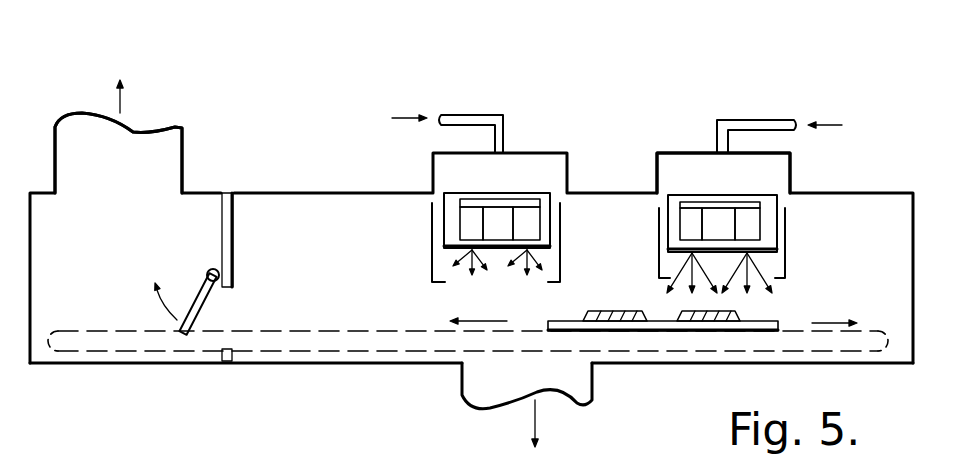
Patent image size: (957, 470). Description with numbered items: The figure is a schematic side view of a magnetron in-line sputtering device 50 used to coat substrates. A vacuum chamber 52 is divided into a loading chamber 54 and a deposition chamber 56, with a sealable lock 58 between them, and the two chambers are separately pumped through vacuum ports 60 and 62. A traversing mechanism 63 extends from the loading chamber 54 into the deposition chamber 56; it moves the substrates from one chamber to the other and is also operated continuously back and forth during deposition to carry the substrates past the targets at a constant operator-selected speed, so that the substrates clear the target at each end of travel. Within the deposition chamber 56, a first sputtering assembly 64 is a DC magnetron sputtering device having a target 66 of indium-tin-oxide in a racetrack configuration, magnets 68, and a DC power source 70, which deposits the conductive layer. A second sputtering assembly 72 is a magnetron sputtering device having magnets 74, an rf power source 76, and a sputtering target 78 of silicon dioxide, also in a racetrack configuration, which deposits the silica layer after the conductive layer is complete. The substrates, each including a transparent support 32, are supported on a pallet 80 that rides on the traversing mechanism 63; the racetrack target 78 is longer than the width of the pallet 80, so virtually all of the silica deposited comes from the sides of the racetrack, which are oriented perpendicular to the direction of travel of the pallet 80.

The sputtering device 50 is at (265, 39).
The vacuum chamber 52 is at (257, 193).
The loading chamber 54 is at (83, 364).
The deposition chamber 56 is at (410, 365).
The sealable lock 58 is at (190, 335).
The vacuum port 60 is at (63, 148).
The vacuum port 62 is at (460, 390).
The traversing mechanism 63 is at (107, 330).
The first sputtering assembly 64 is at (398, 222).
The target 66 is at (498, 250).
The magnets 68 is at (525, 205).
The DC power source 70 is at (452, 127).
The second sputtering assembly 72 is at (647, 117).
The magnets 74 is at (748, 204).
The rf power source 76 is at (735, 120).
The sputtering target 78 is at (672, 252).
The pallet 80 is at (778, 322).
The transparent support 32 is at (580, 321).